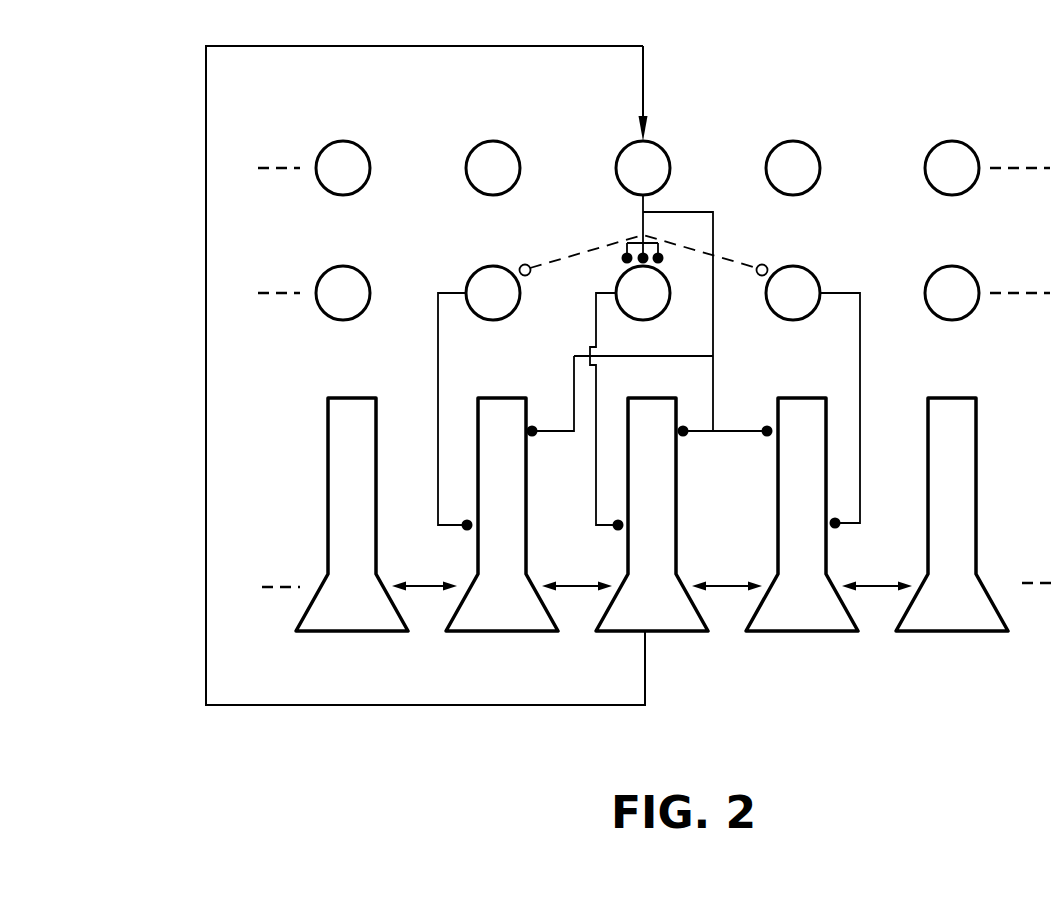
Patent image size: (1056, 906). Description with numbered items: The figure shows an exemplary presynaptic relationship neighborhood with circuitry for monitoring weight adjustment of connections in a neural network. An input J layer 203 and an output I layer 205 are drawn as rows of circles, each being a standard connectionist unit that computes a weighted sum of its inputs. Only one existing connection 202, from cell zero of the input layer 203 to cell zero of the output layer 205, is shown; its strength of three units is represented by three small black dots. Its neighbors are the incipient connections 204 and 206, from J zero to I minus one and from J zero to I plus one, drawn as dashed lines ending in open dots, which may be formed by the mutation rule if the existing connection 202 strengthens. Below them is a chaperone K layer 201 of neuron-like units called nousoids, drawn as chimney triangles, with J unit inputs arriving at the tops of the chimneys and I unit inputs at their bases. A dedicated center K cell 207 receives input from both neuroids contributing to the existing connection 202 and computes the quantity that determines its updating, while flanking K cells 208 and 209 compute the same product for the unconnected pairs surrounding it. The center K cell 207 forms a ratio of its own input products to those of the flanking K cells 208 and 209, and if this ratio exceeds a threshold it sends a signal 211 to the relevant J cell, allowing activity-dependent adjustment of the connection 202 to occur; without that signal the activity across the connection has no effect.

The K layer 201 is at (594, 540).
The connection 202 is at (641, 208).
The input (J) layer 203 is at (151, 166).
The incipient connection (J0 to I-1) 204 is at (578, 253).
The output (I) layer 205 is at (151, 291).
The incipient connection (J0 to I1) 206 is at (732, 258).
The center K cell 207 is at (660, 633).
The flanking K cell 208 is at (493, 633).
The flanking K cell 209 is at (810, 633).
The signal 211 is at (297, 706).